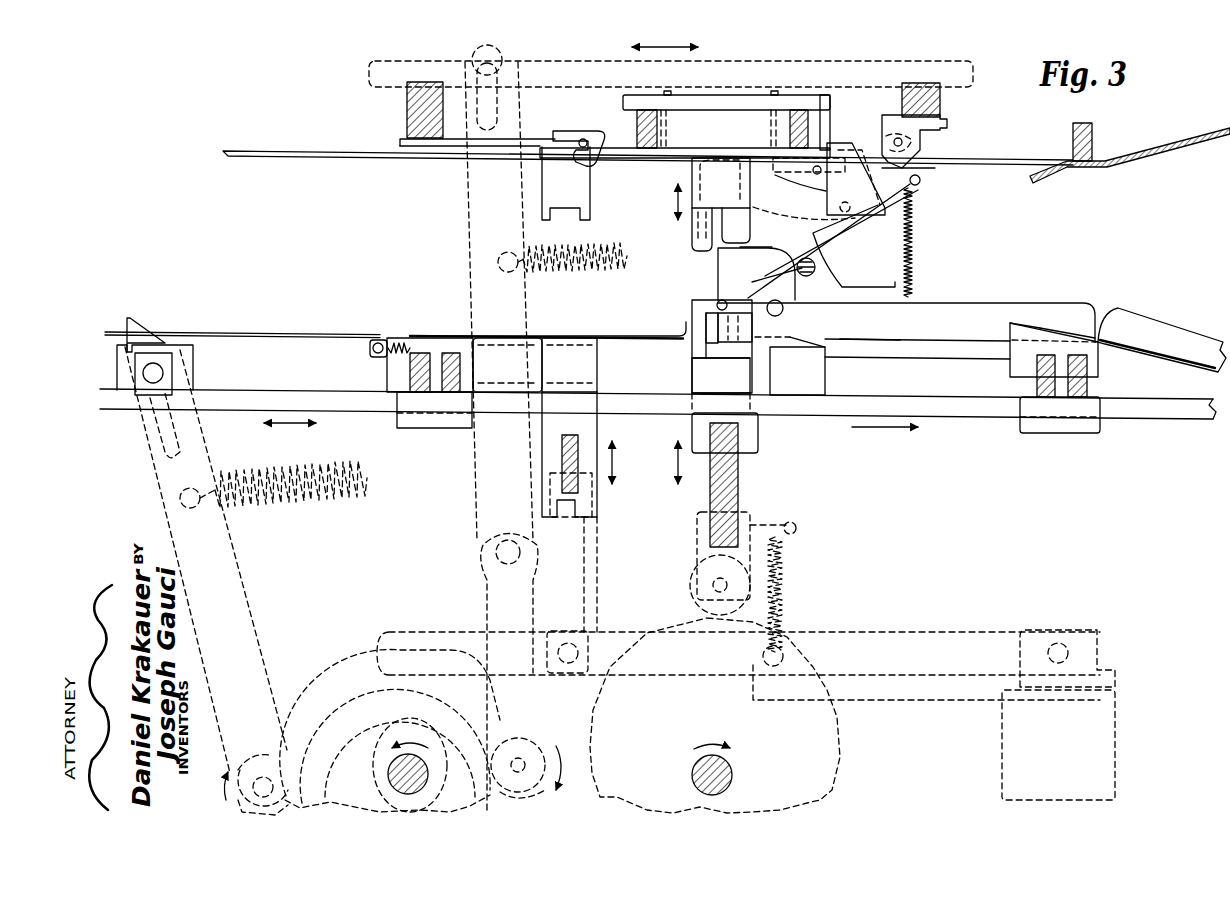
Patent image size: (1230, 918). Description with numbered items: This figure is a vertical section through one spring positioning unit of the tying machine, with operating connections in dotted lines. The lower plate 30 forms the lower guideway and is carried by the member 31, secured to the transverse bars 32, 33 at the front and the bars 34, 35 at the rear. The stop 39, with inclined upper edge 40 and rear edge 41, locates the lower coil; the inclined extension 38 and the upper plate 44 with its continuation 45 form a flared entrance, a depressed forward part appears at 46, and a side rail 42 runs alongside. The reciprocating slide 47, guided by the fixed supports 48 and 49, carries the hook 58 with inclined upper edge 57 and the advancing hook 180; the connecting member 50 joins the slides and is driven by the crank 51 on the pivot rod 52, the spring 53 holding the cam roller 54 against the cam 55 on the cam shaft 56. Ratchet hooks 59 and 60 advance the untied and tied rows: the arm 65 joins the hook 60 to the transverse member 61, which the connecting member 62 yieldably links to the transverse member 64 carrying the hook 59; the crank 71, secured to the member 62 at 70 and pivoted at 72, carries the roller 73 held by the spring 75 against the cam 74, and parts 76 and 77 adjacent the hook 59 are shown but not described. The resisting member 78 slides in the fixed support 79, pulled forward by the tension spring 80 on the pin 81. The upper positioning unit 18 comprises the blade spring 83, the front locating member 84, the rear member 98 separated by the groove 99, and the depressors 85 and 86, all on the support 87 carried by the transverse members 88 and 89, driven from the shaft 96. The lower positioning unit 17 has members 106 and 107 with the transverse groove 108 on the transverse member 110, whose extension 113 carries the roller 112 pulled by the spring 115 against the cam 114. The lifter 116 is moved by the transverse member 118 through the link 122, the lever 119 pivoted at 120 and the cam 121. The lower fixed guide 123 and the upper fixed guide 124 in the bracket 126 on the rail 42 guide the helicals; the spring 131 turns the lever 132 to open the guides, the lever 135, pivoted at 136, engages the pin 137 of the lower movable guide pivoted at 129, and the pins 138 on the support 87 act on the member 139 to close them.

The lower coil positioning unit 17 is at (758, 438).
The upper positioning unit 18 is at (728, 95).
The lower plate 30 is at (918, 340).
The supporting member 31 is at (940, 359).
The transversely extending bar 32 is at (1037, 380).
The transversely extending bar 33 is at (1087, 386).
The bar 34 is at (410, 376).
The bar 35 is at (460, 380).
The inclined extension 38 is at (1122, 352).
The stop 39 is at (1022, 325).
The inclined edge 40 is at (1060, 332).
The rear edge 41 is at (1010, 336).
The side rail 42 is at (991, 303).
The upper horizontal plate 44 is at (1004, 163).
The upper inclined plate 45 is at (1138, 158).
The depressed forward part 46 is at (872, 339).
The slide 47 is at (962, 411).
The fixed support 48 is at (1052, 433).
The fixed support 49 is at (430, 428).
The connecting member 50 is at (172, 352).
The crank 51 is at (242, 604).
The pivot rod 52 is at (252, 785).
The spring 53 is at (292, 500).
The cam roller 54 is at (258, 752).
The cam 55 is at (360, 668).
The cam shaft 56 is at (388, 774).
The inclined upper edge 57 is at (818, 338).
The hook 58 is at (784, 312).
The ratchet hook 59 is at (920, 146).
The ratchet hook 60 is at (588, 131).
The reciprocating transverse member 61 is at (407, 110).
The connecting member 62 is at (368, 72).
The transverse member 64 is at (940, 104).
The arm 65 is at (520, 145).
The crank securing point 70 is at (503, 59).
The crank 71 is at (467, 192).
The crank pivot 72 is at (510, 565).
The roller 73 is at (546, 788).
The cam 74 is at (447, 720).
The spring 75 is at (585, 268).
The bracket 76 is at (947, 124).
The pin 77 is at (918, 170).
The resisting member 78 is at (684, 322).
The fixed support 79 is at (528, 388).
The tension spring 80 is at (405, 342).
The pin 81 is at (380, 338).
The blade spring 83 is at (872, 216).
The forward top coil locating member 84 is at (750, 238).
The top coil depressor 85 is at (905, 200).
The top coil depressor 86 is at (590, 194).
The support 87 is at (730, 156).
The transversely extending member 88 is at (808, 132).
The transversely extending member 89 is at (637, 130).
The shaft 96 is at (732, 776).
The rear coil-positioning member 98 is at (695, 230).
The groove 99 is at (735, 310).
The member 106 is at (765, 296).
The member 107 is at (690, 310).
The transverse groove 108 is at (728, 345).
The transversely extending member 110 is at (738, 485).
The roller 112 is at (692, 583).
The extension 113 is at (697, 524).
The cam 114 is at (805, 655).
The spring 115 is at (785, 582).
The lifter 116 is at (597, 375).
The transverse member 118 is at (578, 440).
The lever 119 is at (612, 632).
The lever pivot 120 is at (1068, 632).
The cam 121 is at (838, 765).
The link 122 is at (597, 560).
The lower fixed guide 123 is at (710, 300).
The upper fixed guide 124 is at (692, 218).
The bracket 126 is at (833, 290).
The pivot 129 is at (790, 352).
The spring 131 is at (912, 244).
The lever 132 is at (922, 185).
The lever 135 is at (780, 255).
The lever pivot 136 is at (812, 276).
The pin 137 is at (718, 300).
The pins 138 is at (668, 131).
The member 139 is at (778, 178).
The advancing hook 180 is at (138, 310).